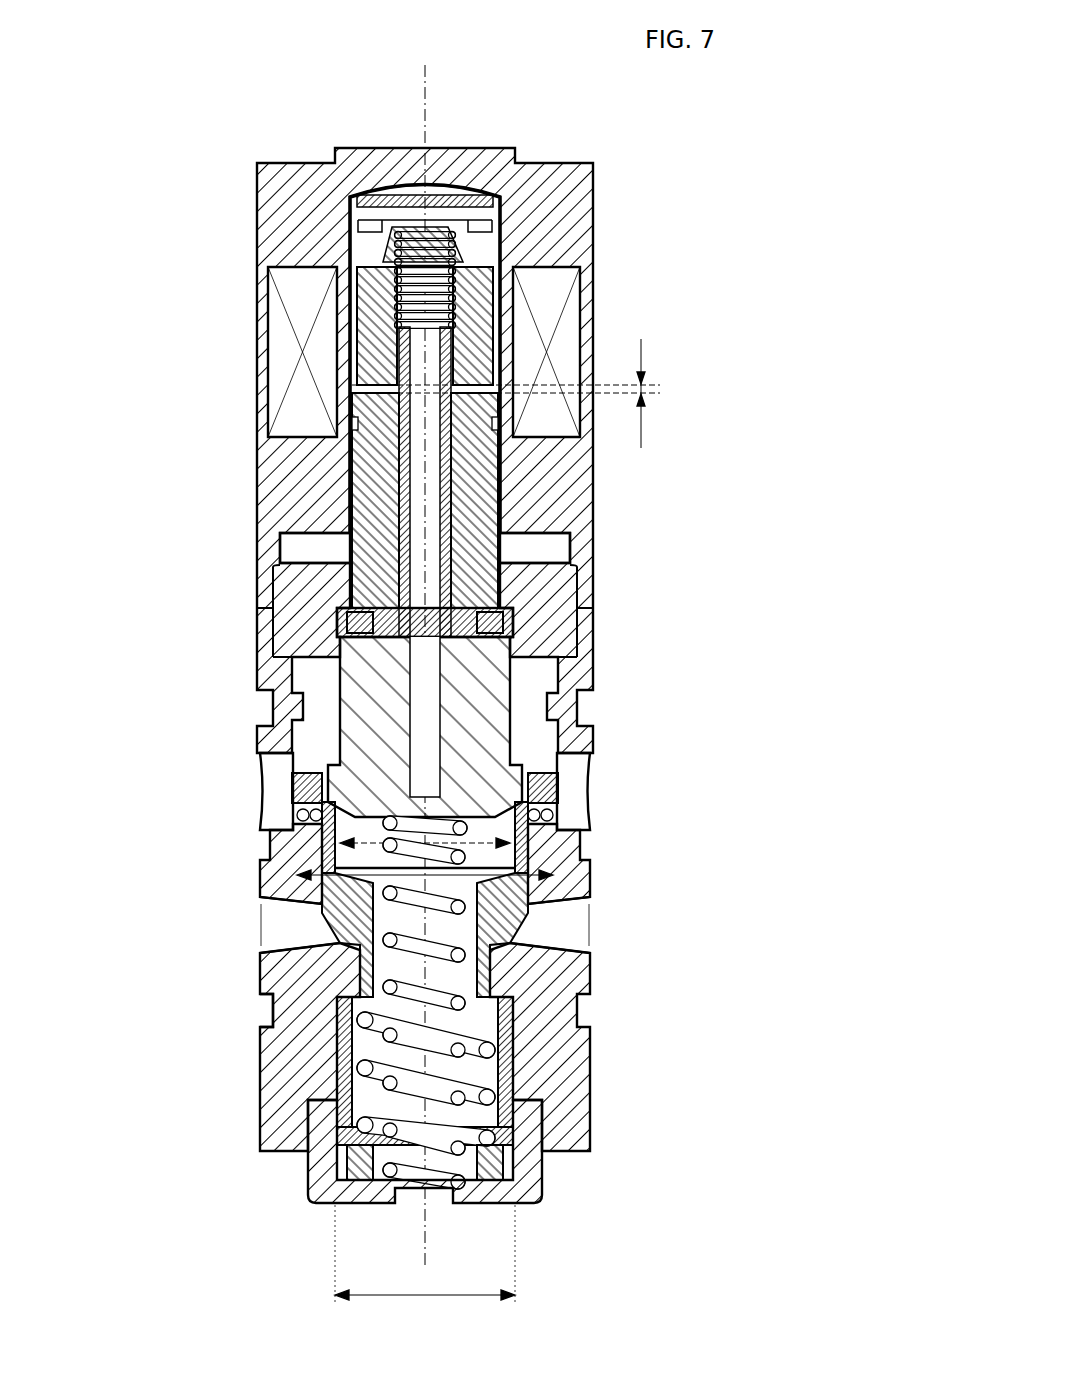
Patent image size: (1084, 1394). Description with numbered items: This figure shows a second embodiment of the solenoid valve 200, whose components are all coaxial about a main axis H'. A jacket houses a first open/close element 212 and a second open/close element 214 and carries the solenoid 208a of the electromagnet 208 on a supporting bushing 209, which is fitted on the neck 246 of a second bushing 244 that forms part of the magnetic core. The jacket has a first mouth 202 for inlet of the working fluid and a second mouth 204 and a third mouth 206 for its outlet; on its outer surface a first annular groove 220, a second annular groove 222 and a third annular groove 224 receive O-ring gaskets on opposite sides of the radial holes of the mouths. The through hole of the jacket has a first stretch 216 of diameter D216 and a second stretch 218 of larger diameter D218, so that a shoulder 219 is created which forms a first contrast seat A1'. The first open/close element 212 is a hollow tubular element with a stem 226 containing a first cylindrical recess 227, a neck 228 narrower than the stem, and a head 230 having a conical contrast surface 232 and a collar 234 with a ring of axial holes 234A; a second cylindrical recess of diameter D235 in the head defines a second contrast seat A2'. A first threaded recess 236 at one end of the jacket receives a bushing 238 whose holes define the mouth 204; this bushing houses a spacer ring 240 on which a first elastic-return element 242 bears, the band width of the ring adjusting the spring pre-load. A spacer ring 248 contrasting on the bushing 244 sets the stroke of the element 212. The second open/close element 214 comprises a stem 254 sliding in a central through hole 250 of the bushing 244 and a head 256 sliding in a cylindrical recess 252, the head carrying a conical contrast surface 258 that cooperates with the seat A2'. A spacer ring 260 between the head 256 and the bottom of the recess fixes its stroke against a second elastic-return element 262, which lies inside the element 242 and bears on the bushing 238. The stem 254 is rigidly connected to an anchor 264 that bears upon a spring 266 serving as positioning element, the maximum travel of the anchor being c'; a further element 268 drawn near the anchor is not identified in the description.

The solenoid valve 200 is at (186, 194).
The first mouth 202 is at (290, 950).
The second mouth 204 is at (320, 1160).
The third mouth 206 is at (275, 770).
The electromagnet 208 is at (680, 265).
The solenoid 208a is at (505, 272).
The supporting bushing 209 is at (257, 170).
The first open/close element 212 is at (560, 1070).
The second open/close element 214 is at (348, 664).
The first stretch 216 is at (480, 1078).
The second stretch 218 is at (295, 850).
The shoulder 219 is at (290, 905).
The first annular groove 220 is at (270, 1015).
The second annular groove 222 is at (280, 878).
The third annular groove 224 is at (272, 715).
The stem 226 is at (350, 1040).
The first cylindrical recess 227 is at (522, 1150).
The neck 228 is at (500, 985).
The head 230 is at (438, 790).
The conical contrast surface 232 is at (380, 920).
The collar 234 is at (295, 800).
The ring of axial holes 234A is at (320, 825).
The first threaded recess 236 is at (510, 1145).
The bushing 238 is at (520, 1192).
The spacer ring 240 is at (365, 1180).
The first elastic-return element 242 is at (515, 1115).
The second bushing 244 is at (290, 590).
The neck 246 is at (378, 500).
The spacer ring 248 is at (536, 800).
The central through hole 250 is at (340, 530).
The cylindrical recess 252 is at (512, 625).
The stem 254 is at (323, 400).
The head 256 is at (490, 680).
The conical contrast surface 258 is at (572, 732).
The spacer ring 260 is at (530, 565).
The second elastic-return element 262 is at (392, 950).
The anchor 264 is at (300, 318).
The spring 266 is at (556, 290).
The return spring 268 is at (470, 243).
The maximum travel of the anchor c' is at (516, 393).
The main axis H' is at (487, 95).
The first contrast seat A1' is at (485, 892).
The second contrast seat A2' is at (524, 799).
The diameter of the first stretch D216 is at (425, 1253).
The diameter of the second stretch D218 is at (535, 945).
The diameter of the second cylindrical recess D235 is at (570, 905).